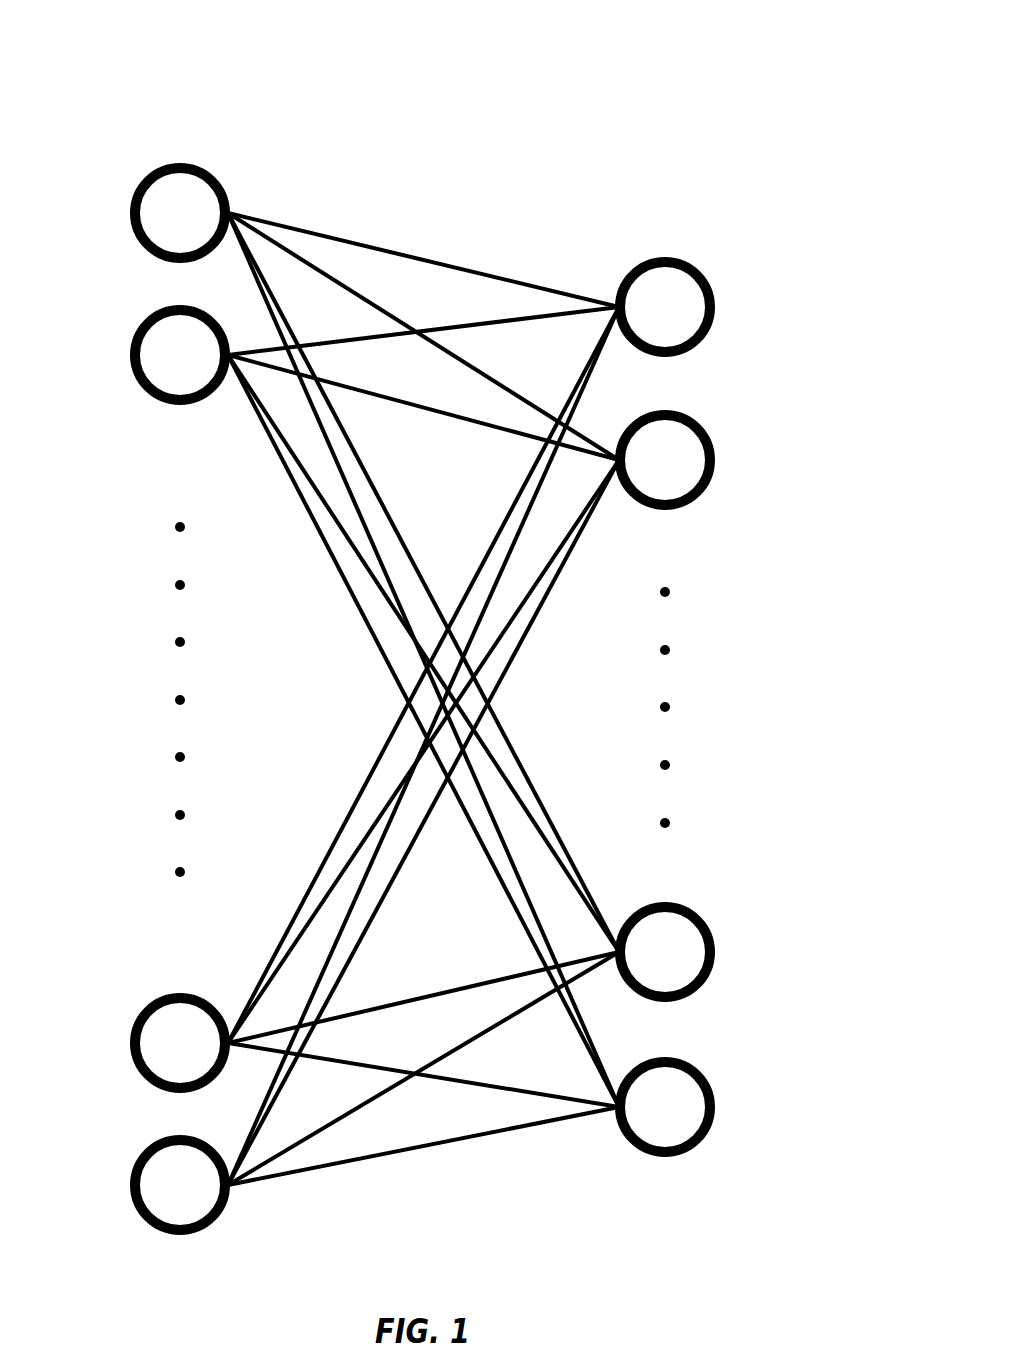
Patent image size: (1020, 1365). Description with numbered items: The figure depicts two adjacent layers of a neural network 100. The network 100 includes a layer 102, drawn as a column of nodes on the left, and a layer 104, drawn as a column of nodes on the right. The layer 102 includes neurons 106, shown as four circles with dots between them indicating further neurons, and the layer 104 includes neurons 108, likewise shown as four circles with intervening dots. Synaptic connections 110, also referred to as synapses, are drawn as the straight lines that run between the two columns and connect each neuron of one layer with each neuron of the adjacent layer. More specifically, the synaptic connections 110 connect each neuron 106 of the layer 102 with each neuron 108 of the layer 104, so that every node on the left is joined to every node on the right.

The neural network 100 is at (784, 54).
The layer 102 is at (185, 1251).
The layer 104 is at (668, 243).
The neurons 106 is at (132, 203).
The neurons 108 is at (715, 290).
The synaptic connections 110 is at (308, 265).